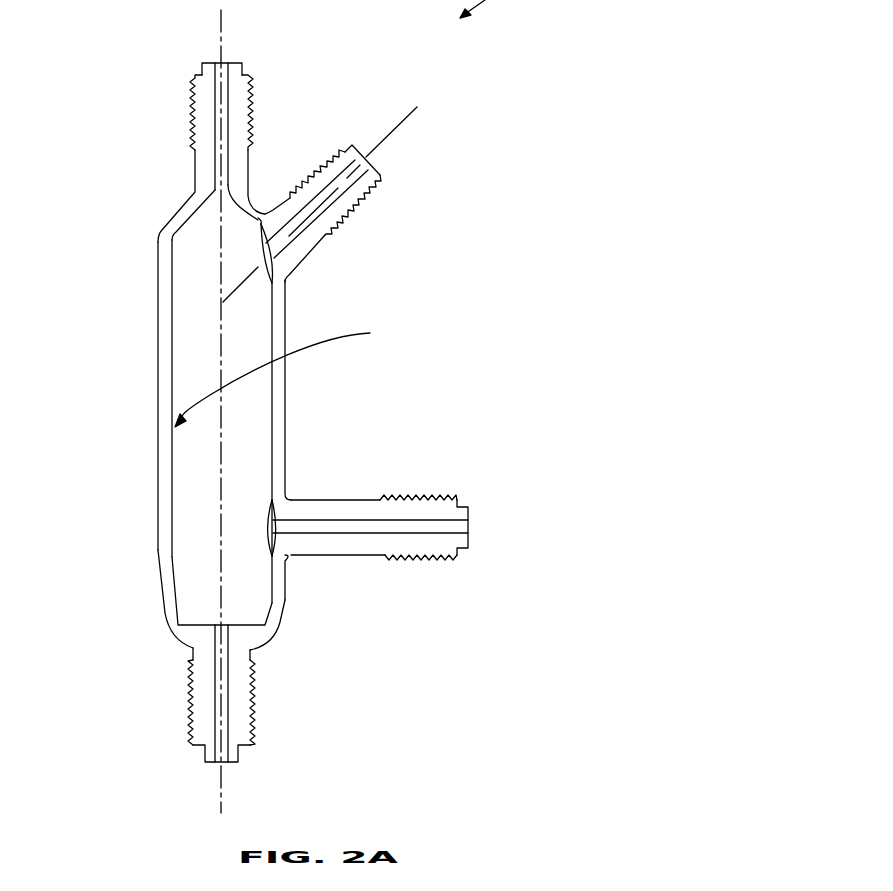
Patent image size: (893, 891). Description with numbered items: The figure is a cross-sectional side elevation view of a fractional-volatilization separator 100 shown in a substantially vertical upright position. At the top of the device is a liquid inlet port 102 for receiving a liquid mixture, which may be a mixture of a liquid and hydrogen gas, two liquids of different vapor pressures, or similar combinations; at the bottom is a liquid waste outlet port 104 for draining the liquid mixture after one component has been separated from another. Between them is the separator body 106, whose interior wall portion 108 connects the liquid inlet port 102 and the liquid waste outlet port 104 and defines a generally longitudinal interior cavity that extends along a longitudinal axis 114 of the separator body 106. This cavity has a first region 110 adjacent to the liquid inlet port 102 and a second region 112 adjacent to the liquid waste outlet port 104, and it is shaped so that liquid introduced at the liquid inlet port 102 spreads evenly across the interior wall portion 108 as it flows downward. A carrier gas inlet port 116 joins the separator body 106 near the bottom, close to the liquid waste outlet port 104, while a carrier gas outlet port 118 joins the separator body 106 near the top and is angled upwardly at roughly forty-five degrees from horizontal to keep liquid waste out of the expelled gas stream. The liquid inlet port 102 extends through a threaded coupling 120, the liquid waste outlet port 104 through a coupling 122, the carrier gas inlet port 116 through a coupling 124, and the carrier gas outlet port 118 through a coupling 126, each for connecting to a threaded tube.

The fractional-volatilization separator 100 is at (485, 890).
The liquid inlet port 102 is at (220, 183).
The liquid waste outlet port 104 is at (217, 630).
The separator body 106 is at (158, 383).
The interior wall portion 108 is at (292, 376).
The first region 110 is at (257, 205).
The second region 112 is at (172, 375).
The longitudinal axis 114 is at (220, 522).
The carrier gas inlet port 116 is at (272, 528).
The carrier gas outlet port 118 is at (266, 255).
The coupling 120 is at (193, 107).
The coupling 122 is at (250, 703).
The coupling 124 is at (432, 500).
The coupling 126 is at (363, 190).